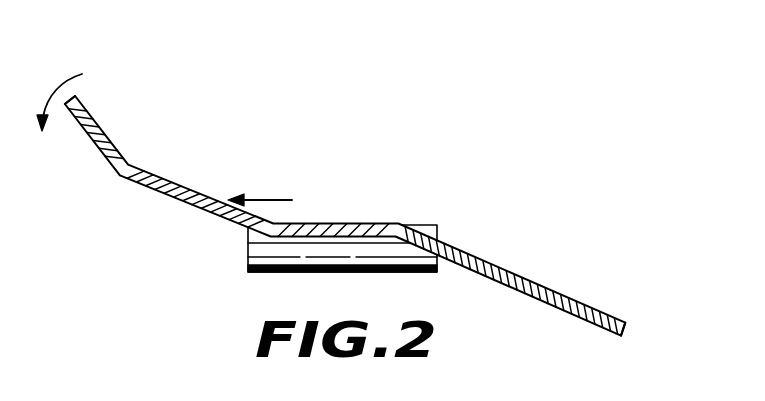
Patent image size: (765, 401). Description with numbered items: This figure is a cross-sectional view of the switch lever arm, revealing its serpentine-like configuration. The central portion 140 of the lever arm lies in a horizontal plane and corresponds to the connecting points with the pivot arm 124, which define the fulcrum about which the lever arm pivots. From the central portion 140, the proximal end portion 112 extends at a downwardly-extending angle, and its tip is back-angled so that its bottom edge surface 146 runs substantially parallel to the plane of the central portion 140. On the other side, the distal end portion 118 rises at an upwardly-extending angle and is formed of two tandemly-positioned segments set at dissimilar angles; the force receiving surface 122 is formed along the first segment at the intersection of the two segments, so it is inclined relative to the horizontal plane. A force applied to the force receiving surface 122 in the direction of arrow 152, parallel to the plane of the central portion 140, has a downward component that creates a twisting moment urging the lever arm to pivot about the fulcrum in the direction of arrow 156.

The proximal end portion 112 is at (528, 283).
The distal end portion 118 is at (100, 124).
The force receiving surface 122 is at (138, 168).
The pivot arm 124 is at (248, 273).
The central portion 140 is at (350, 222).
The bottom edge surface 146 is at (613, 337).
The arrow indicating applied force direction 152 is at (262, 196).
The arrow indicating pivotal movement direction 156 is at (82, 74).